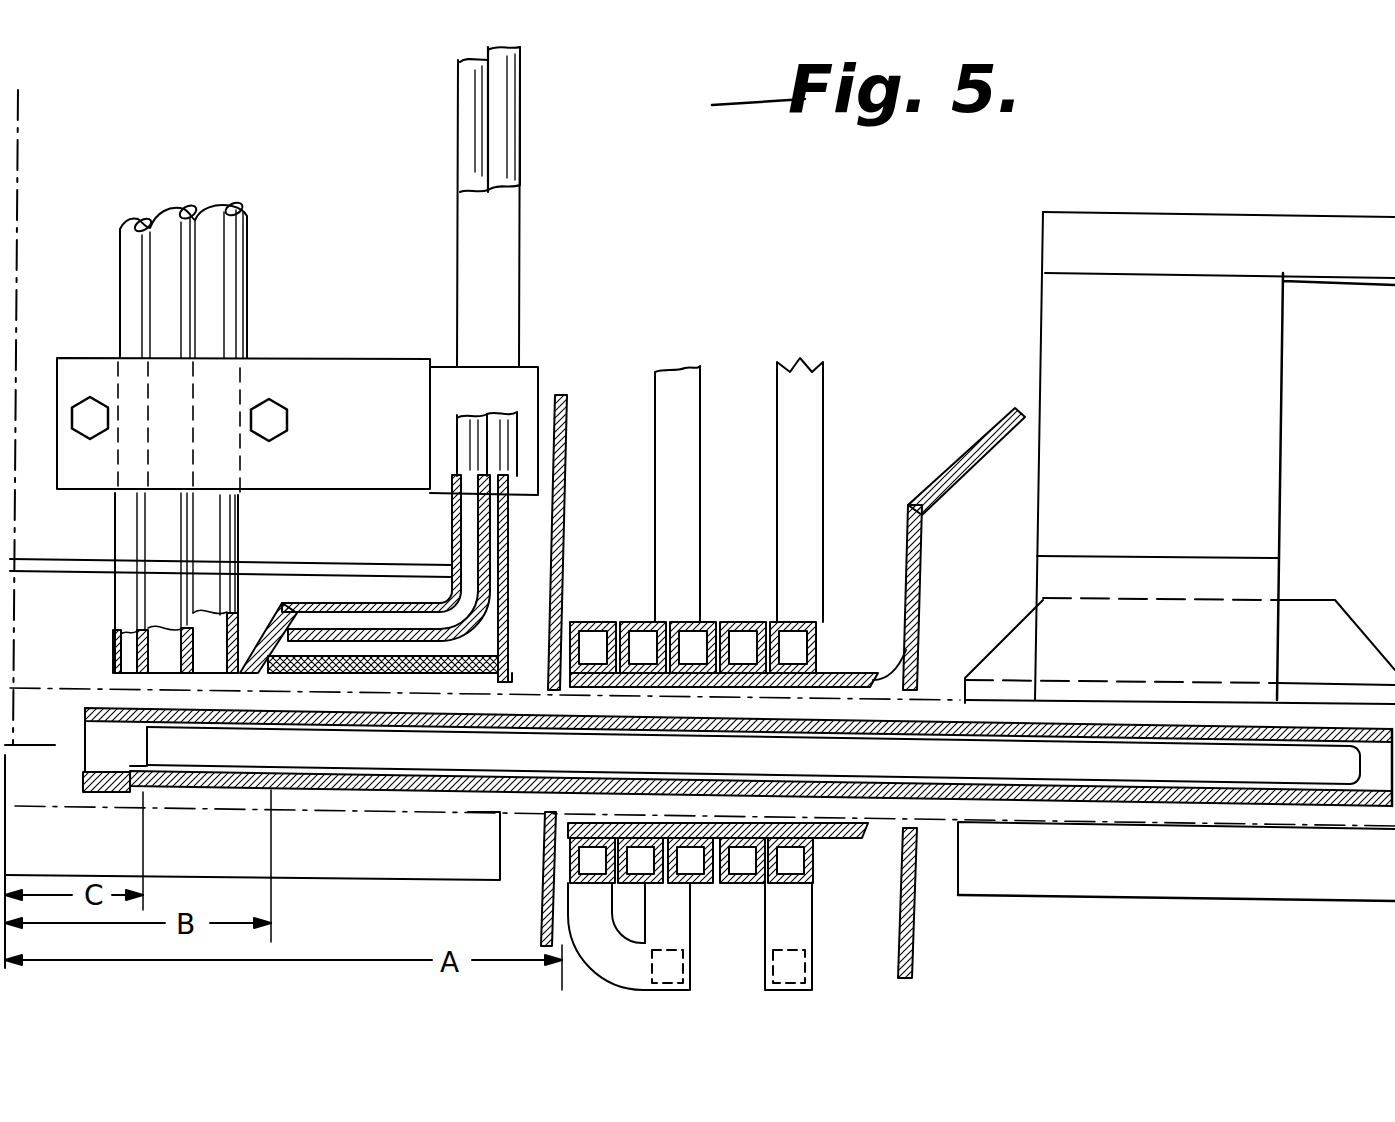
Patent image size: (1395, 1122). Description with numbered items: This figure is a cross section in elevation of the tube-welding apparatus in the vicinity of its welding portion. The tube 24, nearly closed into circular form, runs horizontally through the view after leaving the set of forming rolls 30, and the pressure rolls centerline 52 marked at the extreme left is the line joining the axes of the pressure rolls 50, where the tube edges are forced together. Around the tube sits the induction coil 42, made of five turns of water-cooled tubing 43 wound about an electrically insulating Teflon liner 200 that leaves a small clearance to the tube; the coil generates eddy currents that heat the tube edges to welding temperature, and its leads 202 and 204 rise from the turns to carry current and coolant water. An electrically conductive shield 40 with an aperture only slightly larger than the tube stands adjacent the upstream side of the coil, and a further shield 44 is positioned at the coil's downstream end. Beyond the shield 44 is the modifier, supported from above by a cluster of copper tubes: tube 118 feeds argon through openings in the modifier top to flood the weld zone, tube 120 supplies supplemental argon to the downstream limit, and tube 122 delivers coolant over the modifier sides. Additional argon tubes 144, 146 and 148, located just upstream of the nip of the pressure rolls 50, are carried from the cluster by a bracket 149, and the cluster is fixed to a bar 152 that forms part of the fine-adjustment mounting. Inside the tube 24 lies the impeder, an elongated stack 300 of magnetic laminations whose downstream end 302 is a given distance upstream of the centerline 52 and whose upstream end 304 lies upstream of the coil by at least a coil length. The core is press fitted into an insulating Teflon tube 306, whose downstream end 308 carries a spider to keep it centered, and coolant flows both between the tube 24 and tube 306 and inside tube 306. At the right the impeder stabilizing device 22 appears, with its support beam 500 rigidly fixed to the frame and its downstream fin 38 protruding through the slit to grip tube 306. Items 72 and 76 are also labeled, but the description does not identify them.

The impeder stabilizing device 22 is at (1278, 202).
The tube 24 is at (915, 680).
The forming rolls 30 is at (1105, 893).
The downstream fin 38 is at (1284, 382).
The electrically conductive shield 40 is at (928, 550).
The induction coil 42 is at (755, 575).
The tubing 43 is at (596, 622).
The further shield 44 is at (560, 476).
The pressure rolls 50 is at (426, 882).
The pressure rolls centerline 52 is at (5, 745).
The plate 72 is at (264, 568).
The channel 76 is at (379, 596).
The tube 118 is at (512, 134).
The tube 120 is at (472, 137).
The tube 122 is at (497, 302).
The tube 144 is at (248, 256).
The tube 146 is at (190, 234).
The tube 148 is at (120, 262).
The bracket 149 is at (312, 348).
The bar 152 is at (445, 357).
The electrically insulating liner 200 is at (922, 618).
The coil lead 202 is at (655, 513).
The coil lead 204 is at (836, 418).
The impeder core 300 is at (448, 724).
The downstream end of impeder core 302 is at (140, 770).
The upstream end of impeder core 304 is at (1392, 775).
The tube 306 is at (328, 772).
The downstream end of tube 308 is at (74, 774).
The support beam 500 is at (1110, 213).